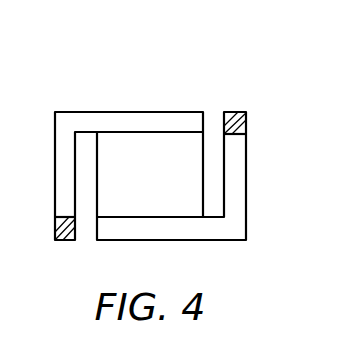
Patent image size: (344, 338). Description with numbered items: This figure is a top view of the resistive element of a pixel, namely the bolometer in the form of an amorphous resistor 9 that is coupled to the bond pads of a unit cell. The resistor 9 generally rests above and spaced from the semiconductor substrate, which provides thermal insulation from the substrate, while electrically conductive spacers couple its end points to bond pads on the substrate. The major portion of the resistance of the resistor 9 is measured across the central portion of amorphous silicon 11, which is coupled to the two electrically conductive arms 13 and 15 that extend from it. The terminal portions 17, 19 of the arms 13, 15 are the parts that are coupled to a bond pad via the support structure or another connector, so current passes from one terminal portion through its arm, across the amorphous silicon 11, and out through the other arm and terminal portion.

The resistor 9 is at (100, 98).
The portion of amorphous silicon 11 is at (138, 185).
The electrically conductive arm 13 is at (148, 118).
The electrically conductive arm 15 is at (223, 241).
The terminal portion 17 is at (63, 241).
The terminal portion 19 is at (240, 116).